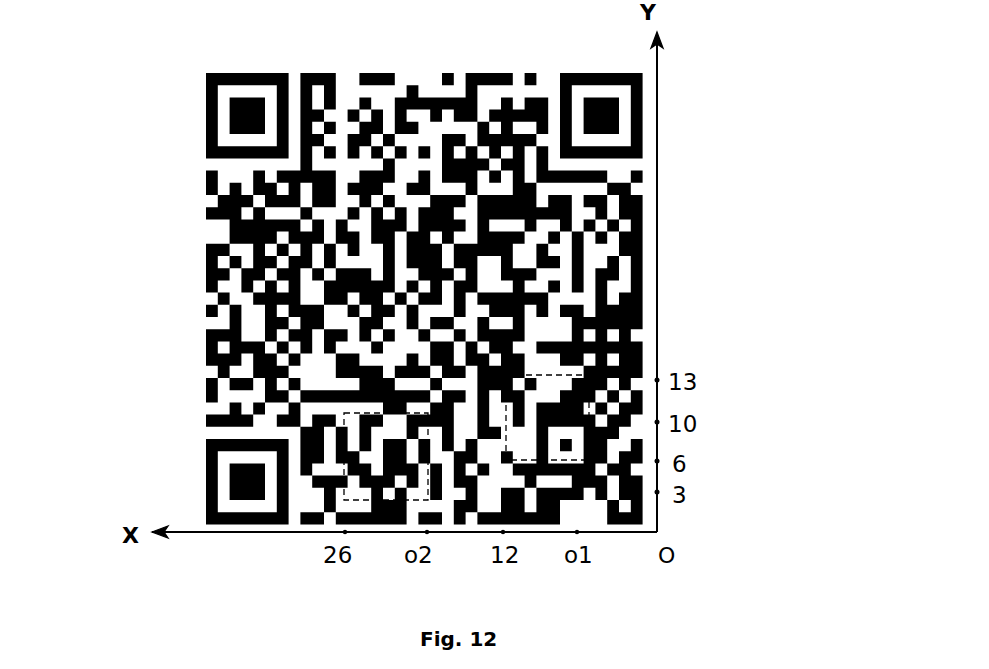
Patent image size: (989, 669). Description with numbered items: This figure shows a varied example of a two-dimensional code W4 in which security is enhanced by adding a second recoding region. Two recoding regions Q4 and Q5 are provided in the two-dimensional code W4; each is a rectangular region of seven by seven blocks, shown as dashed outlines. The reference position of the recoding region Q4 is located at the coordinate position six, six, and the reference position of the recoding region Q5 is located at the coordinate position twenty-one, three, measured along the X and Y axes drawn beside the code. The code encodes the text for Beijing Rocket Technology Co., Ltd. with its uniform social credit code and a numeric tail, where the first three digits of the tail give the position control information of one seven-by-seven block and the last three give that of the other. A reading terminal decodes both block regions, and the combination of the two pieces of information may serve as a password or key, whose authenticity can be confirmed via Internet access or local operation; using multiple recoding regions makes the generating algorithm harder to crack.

The two-dimensional code W4 is at (178, 126).
The recoding region Q4 is at (522, 456).
The recoding region Q5 is at (383, 500).